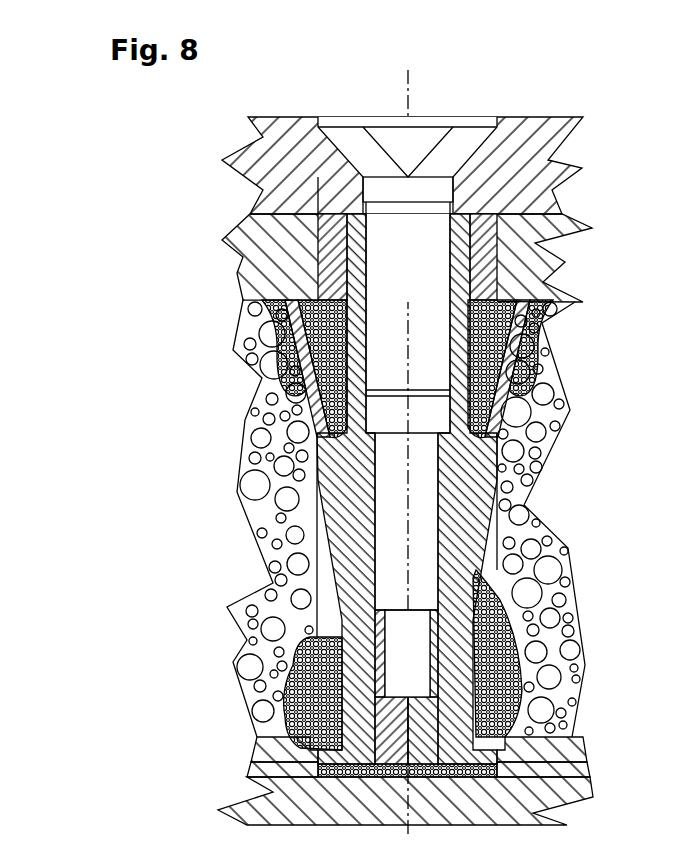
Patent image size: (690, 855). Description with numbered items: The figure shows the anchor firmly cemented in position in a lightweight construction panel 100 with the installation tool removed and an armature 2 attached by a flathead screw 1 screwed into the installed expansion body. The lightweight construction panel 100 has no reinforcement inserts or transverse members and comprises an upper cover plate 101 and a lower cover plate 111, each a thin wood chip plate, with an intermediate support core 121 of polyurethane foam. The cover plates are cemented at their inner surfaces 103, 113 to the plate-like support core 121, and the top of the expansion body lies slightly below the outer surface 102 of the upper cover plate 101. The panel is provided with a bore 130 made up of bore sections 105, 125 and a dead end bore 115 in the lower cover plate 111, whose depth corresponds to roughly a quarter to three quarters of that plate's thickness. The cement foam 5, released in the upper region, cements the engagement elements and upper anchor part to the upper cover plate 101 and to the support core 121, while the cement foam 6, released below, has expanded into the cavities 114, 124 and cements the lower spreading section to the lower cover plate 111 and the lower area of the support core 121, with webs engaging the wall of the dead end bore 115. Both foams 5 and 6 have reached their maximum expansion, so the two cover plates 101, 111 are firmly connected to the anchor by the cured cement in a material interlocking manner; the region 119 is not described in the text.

The flathead screw 1 is at (422, 265).
The armature 2 is at (523, 173).
The cement foam 5 is at (328, 368).
The cement foam 6 is at (290, 661).
The lightweight construction panel 100 is at (351, 518).
The upper cover plate 101 is at (262, 258).
The outer surface 102 is at (280, 215).
The inner surface 103 is at (260, 308).
The bore section 105 is at (332, 303).
The lower cover plate 111 is at (278, 772).
The inner surface 113 is at (273, 737).
The cavity 114 is at (318, 767).
The dead end bore 115 is at (365, 775).
The granular body 119 is at (305, 717).
The support core 121 is at (257, 533).
The cavity 124 is at (330, 617).
The bore section 125 is at (322, 573).
The bore 130 is at (318, 177).